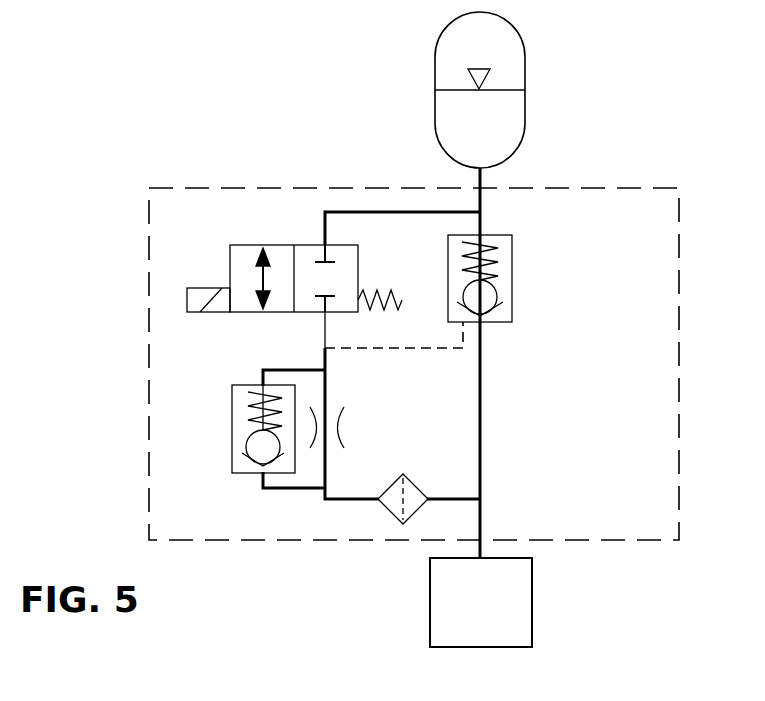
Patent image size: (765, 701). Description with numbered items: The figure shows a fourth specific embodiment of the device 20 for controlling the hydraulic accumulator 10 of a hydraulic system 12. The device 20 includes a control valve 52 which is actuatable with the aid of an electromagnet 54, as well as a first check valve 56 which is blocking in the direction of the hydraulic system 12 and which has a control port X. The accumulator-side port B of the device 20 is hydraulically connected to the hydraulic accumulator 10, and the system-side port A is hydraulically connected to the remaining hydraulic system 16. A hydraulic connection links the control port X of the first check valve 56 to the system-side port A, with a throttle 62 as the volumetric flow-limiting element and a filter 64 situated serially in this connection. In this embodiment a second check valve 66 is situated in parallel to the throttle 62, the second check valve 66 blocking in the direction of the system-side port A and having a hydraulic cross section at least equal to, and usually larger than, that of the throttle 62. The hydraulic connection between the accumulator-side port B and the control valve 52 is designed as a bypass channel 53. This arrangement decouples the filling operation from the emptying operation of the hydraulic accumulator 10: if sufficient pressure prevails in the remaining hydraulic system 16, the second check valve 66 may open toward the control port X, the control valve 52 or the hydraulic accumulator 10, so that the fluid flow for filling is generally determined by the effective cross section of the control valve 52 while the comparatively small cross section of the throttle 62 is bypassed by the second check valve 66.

The hydraulic accumulator 10 is at (435, 58).
The hydraulic system 12 is at (176, 128).
The remaining hydraulic system 16 is at (532, 603).
The device 20 is at (617, 188).
The control valve 52 is at (287, 224).
The bypass channel 53 is at (392, 212).
The electromagnet 54 is at (187, 291).
The first check valve 56 is at (512, 279).
The throttle 62 is at (338, 438).
The filter 64 is at (419, 480).
The second check valve 66 is at (232, 430).